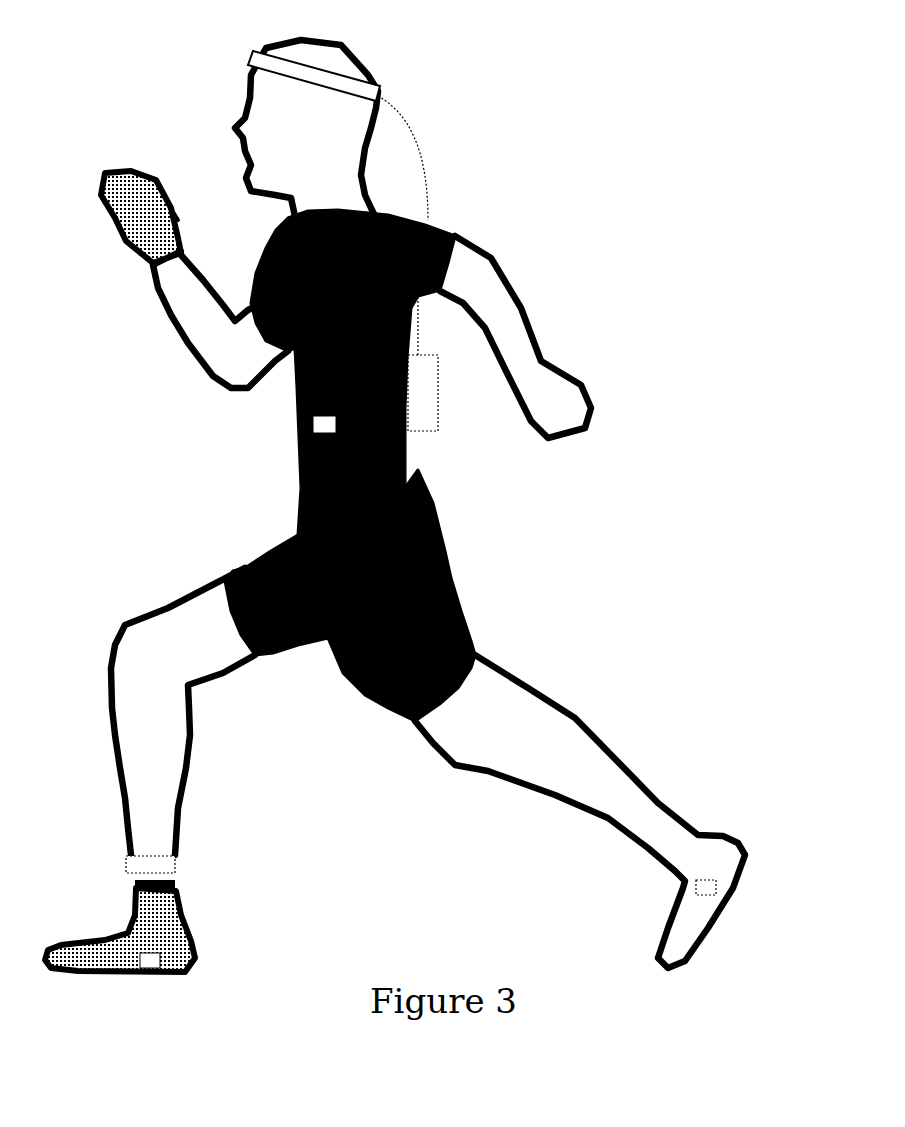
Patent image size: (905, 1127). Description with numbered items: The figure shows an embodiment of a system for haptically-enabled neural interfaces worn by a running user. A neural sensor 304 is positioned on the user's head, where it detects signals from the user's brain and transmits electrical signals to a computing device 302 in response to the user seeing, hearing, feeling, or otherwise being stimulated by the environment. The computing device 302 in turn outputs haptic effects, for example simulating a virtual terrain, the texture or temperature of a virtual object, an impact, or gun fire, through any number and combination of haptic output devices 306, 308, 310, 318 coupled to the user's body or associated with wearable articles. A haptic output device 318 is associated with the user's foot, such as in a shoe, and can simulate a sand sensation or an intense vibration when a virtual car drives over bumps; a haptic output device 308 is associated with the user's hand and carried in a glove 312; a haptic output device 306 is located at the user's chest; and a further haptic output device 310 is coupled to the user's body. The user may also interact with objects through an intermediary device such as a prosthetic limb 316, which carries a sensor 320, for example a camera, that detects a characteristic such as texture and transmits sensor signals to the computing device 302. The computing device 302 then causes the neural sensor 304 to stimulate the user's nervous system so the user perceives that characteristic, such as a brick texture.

The computing device 302 is at (415, 423).
The neural sensor 304 is at (308, 62).
The haptic output device 306 is at (312, 419).
The haptic output device 308 is at (100, 171).
The haptic output device 310 is at (147, 848).
The glove 312 is at (162, 200).
The prosthetic limb 316 is at (103, 930).
The haptic output device 318 is at (698, 873).
The sensor 320 is at (143, 947).